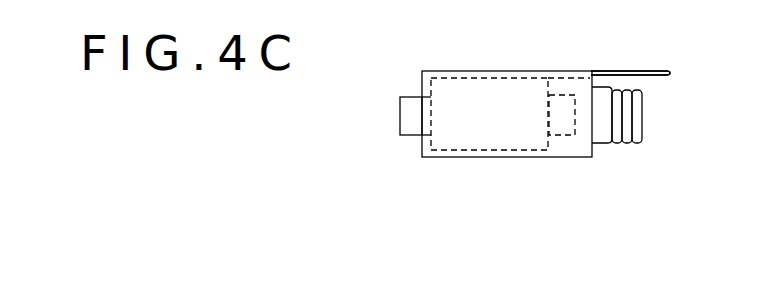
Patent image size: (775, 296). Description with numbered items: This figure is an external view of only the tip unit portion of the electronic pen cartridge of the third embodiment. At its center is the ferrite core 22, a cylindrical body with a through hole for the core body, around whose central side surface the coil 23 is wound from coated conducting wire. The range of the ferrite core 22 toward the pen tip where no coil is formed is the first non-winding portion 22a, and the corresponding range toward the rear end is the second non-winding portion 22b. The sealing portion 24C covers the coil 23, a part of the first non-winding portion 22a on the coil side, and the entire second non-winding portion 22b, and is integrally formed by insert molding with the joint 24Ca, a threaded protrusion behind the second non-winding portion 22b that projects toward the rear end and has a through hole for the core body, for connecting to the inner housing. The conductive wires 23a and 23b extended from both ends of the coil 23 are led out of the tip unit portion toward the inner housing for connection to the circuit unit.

The ferrite core 22 is at (484, 177).
The first non-winding portion 22a is at (410, 136).
The second non-winding portion 22b is at (555, 154).
The coil 23 is at (459, 78).
The conductive wire 23a is at (627, 70).
The conductive wire 23b is at (630, 73).
The sealing portion 24C is at (537, 78).
The joint 24Ca is at (625, 144).